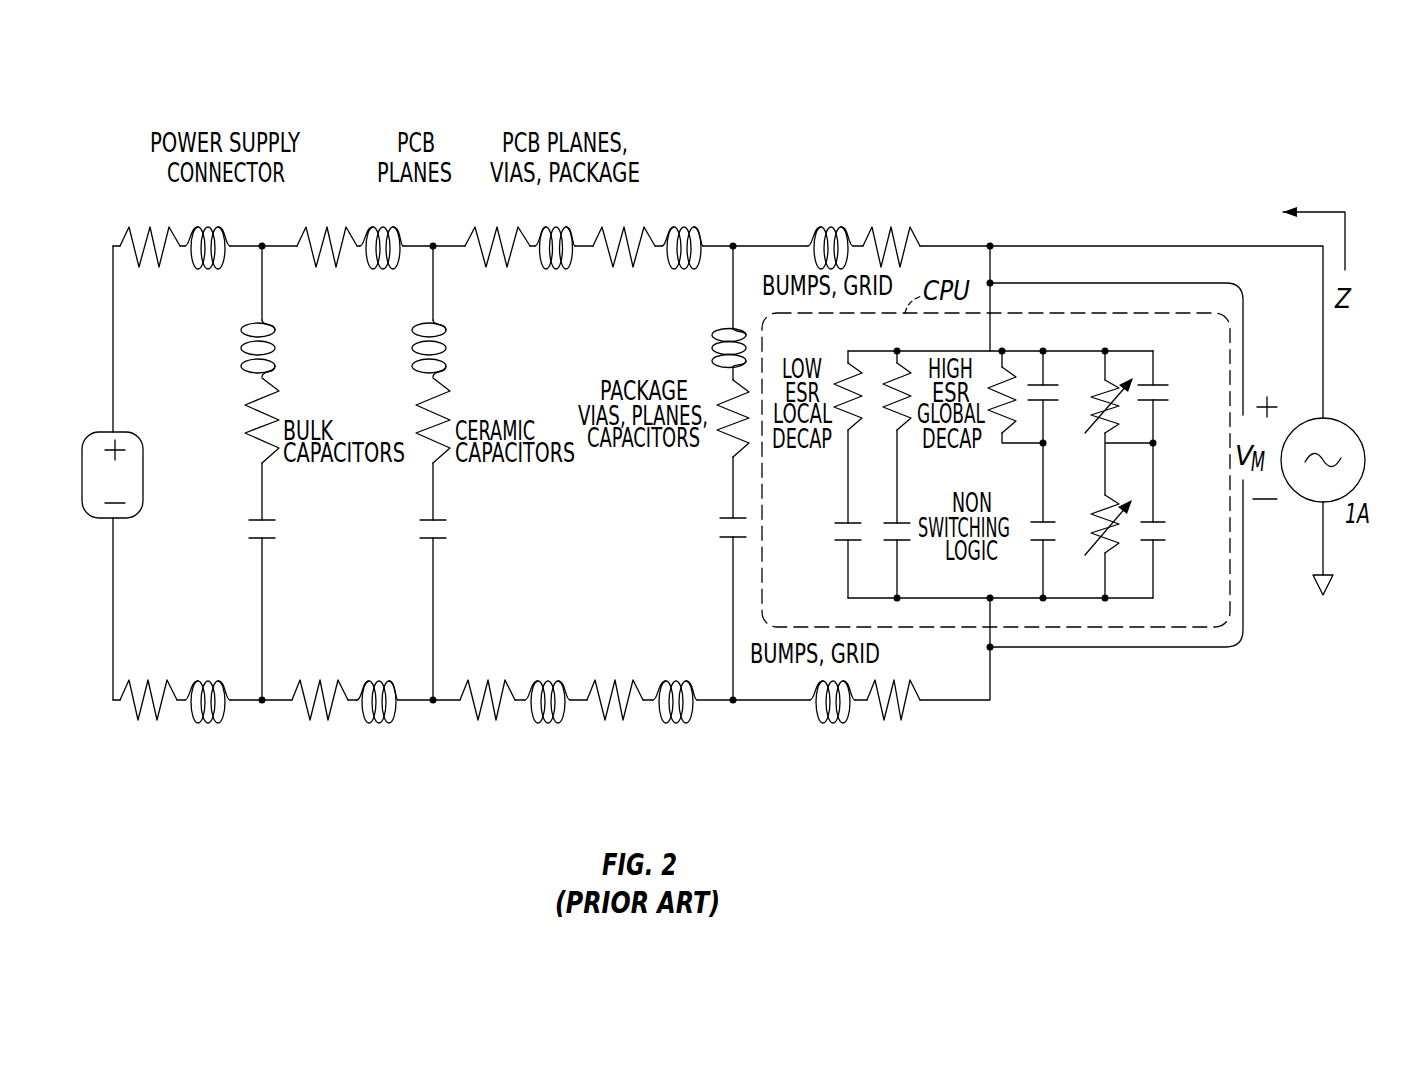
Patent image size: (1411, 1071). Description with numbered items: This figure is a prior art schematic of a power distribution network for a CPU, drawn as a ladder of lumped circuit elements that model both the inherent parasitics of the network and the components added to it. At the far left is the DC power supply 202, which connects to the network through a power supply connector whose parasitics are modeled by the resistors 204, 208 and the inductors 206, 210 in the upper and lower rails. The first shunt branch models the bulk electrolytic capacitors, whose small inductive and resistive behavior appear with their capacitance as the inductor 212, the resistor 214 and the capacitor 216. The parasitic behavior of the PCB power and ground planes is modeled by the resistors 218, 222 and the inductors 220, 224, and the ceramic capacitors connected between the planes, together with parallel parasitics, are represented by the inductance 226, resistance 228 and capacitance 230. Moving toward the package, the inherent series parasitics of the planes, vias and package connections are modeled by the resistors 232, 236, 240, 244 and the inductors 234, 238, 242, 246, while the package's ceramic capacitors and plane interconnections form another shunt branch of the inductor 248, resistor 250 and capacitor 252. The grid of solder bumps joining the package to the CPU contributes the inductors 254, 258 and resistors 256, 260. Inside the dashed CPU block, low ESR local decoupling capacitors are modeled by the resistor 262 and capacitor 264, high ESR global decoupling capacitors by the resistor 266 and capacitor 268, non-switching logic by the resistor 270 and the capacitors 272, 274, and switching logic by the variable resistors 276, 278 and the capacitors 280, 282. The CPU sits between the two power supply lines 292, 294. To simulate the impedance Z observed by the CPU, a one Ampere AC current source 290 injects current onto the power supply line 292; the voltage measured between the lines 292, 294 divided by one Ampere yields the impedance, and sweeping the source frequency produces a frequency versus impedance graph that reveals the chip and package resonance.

The DC power supply 202 is at (127, 437).
The resistor 204 is at (138, 265).
The inductor 206 is at (217, 228).
The resistor 208 is at (148, 685).
The inductor 210 is at (207, 722).
The inductor 212 is at (277, 353).
The resistor 214 is at (280, 408).
The capacitor 216 is at (268, 520).
The resistor 218 is at (326, 265).
The inductor 220 is at (392, 228).
The resistor 222 is at (297, 685).
The inductor 224 is at (380, 722).
The inductance 226 is at (448, 353).
The resistance 228 is at (451, 408).
The capacitance 230 is at (441, 520).
The resistor 232 is at (488, 265).
The inductor 234 is at (563, 228).
The resistor 236 is at (614, 265).
The inductor 238 is at (690, 228).
The resistor 240 is at (473, 685).
The inductor 242 is at (547, 722).
The resistor 244 is at (596, 685).
The inductor 246 is at (675, 722).
The inductor 248 is at (712, 357).
The resistor 250 is at (718, 440).
The capacitor 252 is at (722, 538).
The inductor 254 is at (823, 228).
The resistor 256 is at (898, 228).
The inductor 258 is at (833, 722).
The resistor 260 is at (897, 685).
The resistor 262 is at (855, 438).
The capacitor 264 is at (842, 543).
The resistor 266 is at (903, 365).
The capacitor 268 is at (903, 542).
The resistor 270 is at (1010, 367).
The capacitor 272 is at (1048, 385).
The capacitor 274 is at (1050, 520).
The variable resistor 276 is at (1112, 380).
The variable resistor 278 is at (1112, 548).
The capacitor 280 is at (1160, 385).
The capacitor 282 is at (1158, 522).
The AC current source 290 is at (1333, 420).
The power supply line 292 is at (1238, 293).
The power supply line 294 is at (1240, 645).